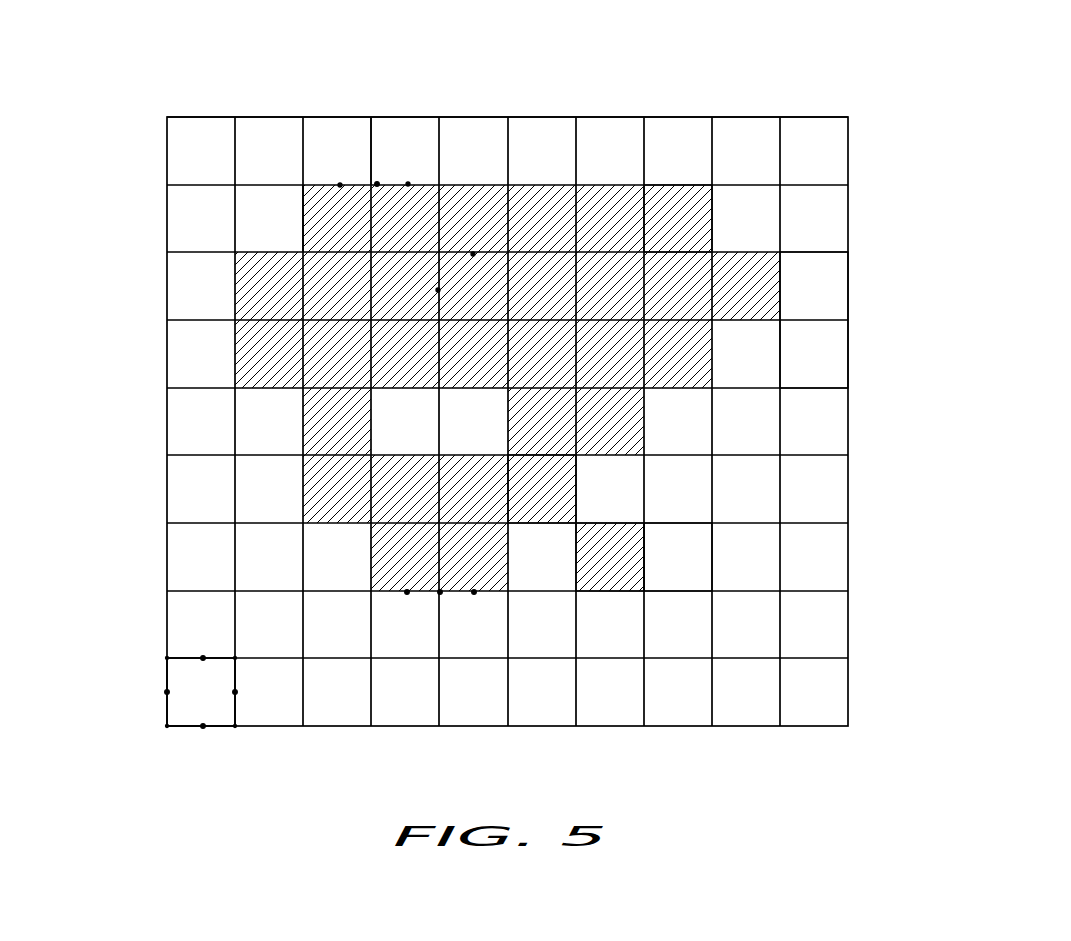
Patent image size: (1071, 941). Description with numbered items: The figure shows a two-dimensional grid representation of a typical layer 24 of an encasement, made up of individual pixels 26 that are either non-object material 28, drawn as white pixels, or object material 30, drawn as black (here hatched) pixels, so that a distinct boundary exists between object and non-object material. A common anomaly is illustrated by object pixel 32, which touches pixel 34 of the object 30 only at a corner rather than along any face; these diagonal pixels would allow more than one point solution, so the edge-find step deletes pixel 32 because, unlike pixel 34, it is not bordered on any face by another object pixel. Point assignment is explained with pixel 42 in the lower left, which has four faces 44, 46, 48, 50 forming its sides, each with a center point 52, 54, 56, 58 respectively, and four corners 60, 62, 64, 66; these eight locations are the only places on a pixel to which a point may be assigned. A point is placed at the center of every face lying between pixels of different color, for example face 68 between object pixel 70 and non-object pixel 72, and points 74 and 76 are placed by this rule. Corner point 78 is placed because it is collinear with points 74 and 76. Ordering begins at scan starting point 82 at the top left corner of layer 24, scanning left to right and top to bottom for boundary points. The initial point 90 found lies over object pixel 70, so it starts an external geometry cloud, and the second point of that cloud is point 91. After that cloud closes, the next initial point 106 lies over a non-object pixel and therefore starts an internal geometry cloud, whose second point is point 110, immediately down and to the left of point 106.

The layer 24 is at (812, 114).
The pixels 26 is at (823, 351).
The non-object material 28 is at (679, 600).
The object material 30 is at (716, 217).
The object pixel 32 is at (609, 600).
The pixel 34 is at (582, 495).
The pixel 42 is at (176, 740).
The face 44 is at (203, 658).
The face 46 is at (237, 708).
The face 48 is at (220, 727).
The face 50 is at (167, 710).
The center point 52 is at (187, 657).
The center point 54 is at (236, 691).
The center point 56 is at (203, 727).
The center point 58 is at (167, 692).
The corner 60 is at (236, 658).
The corner 62 is at (237, 728).
The corner 64 is at (165, 728).
The corner 66 is at (167, 658).
The face 68 is at (313, 184).
The object pixel 70 is at (300, 217).
The non-object pixel 72 is at (376, 144).
The point 74 is at (474, 592).
The point 76 is at (407, 592).
The corner point 78 is at (440, 592).
The scan starting point 82 is at (167, 118).
The initial point 90 is at (340, 184).
The second point 91 is at (380, 183).
The initial point 106 is at (474, 256).
The second point 110 is at (440, 292).